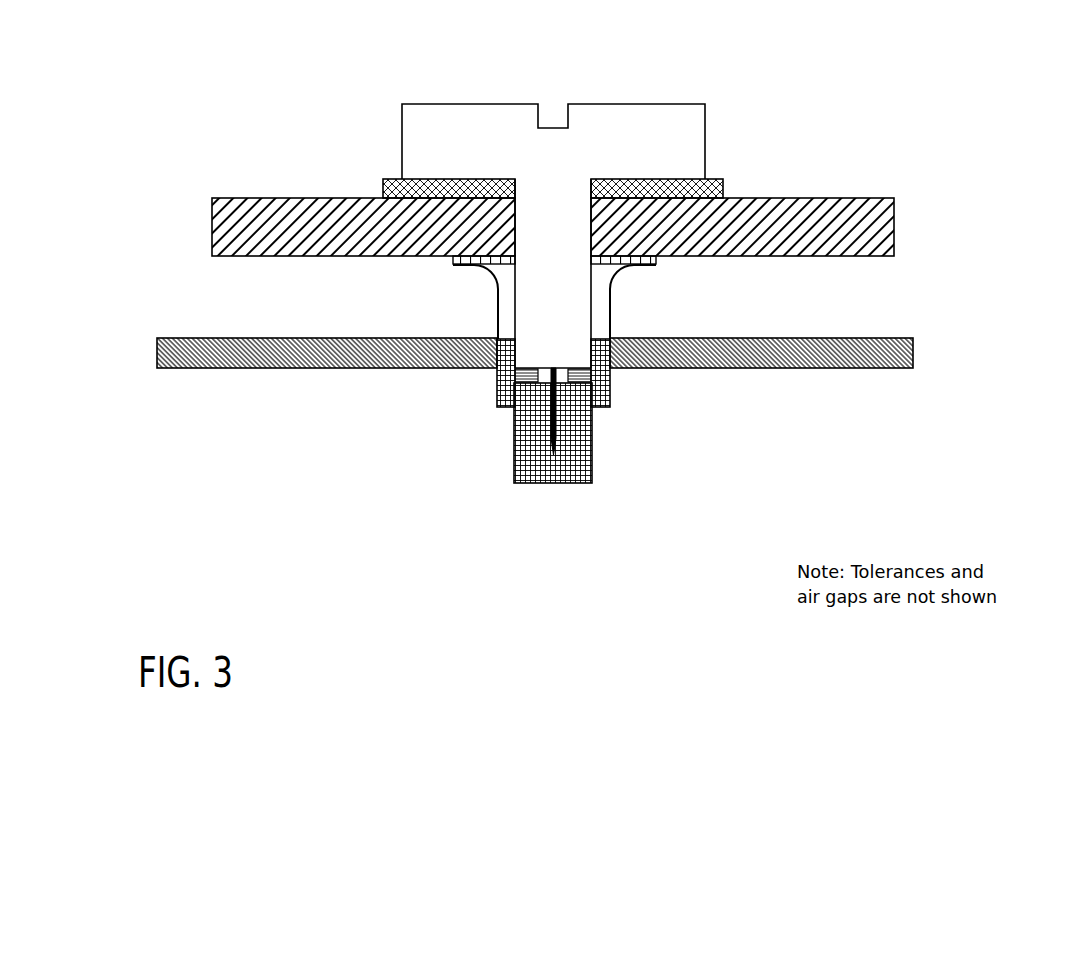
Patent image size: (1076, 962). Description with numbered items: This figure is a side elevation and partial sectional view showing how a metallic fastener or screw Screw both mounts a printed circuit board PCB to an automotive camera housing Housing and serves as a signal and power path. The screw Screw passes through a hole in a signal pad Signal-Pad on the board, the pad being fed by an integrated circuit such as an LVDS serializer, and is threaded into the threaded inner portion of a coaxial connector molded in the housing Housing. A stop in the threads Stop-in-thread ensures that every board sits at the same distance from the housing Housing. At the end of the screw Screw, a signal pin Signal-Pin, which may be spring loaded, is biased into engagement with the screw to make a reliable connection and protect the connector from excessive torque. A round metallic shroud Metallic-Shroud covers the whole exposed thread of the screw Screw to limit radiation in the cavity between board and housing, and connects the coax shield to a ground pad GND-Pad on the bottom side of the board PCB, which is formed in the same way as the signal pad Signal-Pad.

The screw Screw is at (610, 103).
The signal pad Signal-Pad is at (430, 179).
The printed circuit board PCB is at (785, 198).
The ground pad GND-Pad is at (655, 263).
The metallic shroud Metallic-Shroud is at (499, 285).
The housing Housing is at (797, 338).
The stop in the threads Stop-in-thread is at (592, 380).
The signal pin Signal-Pin is at (554, 455).